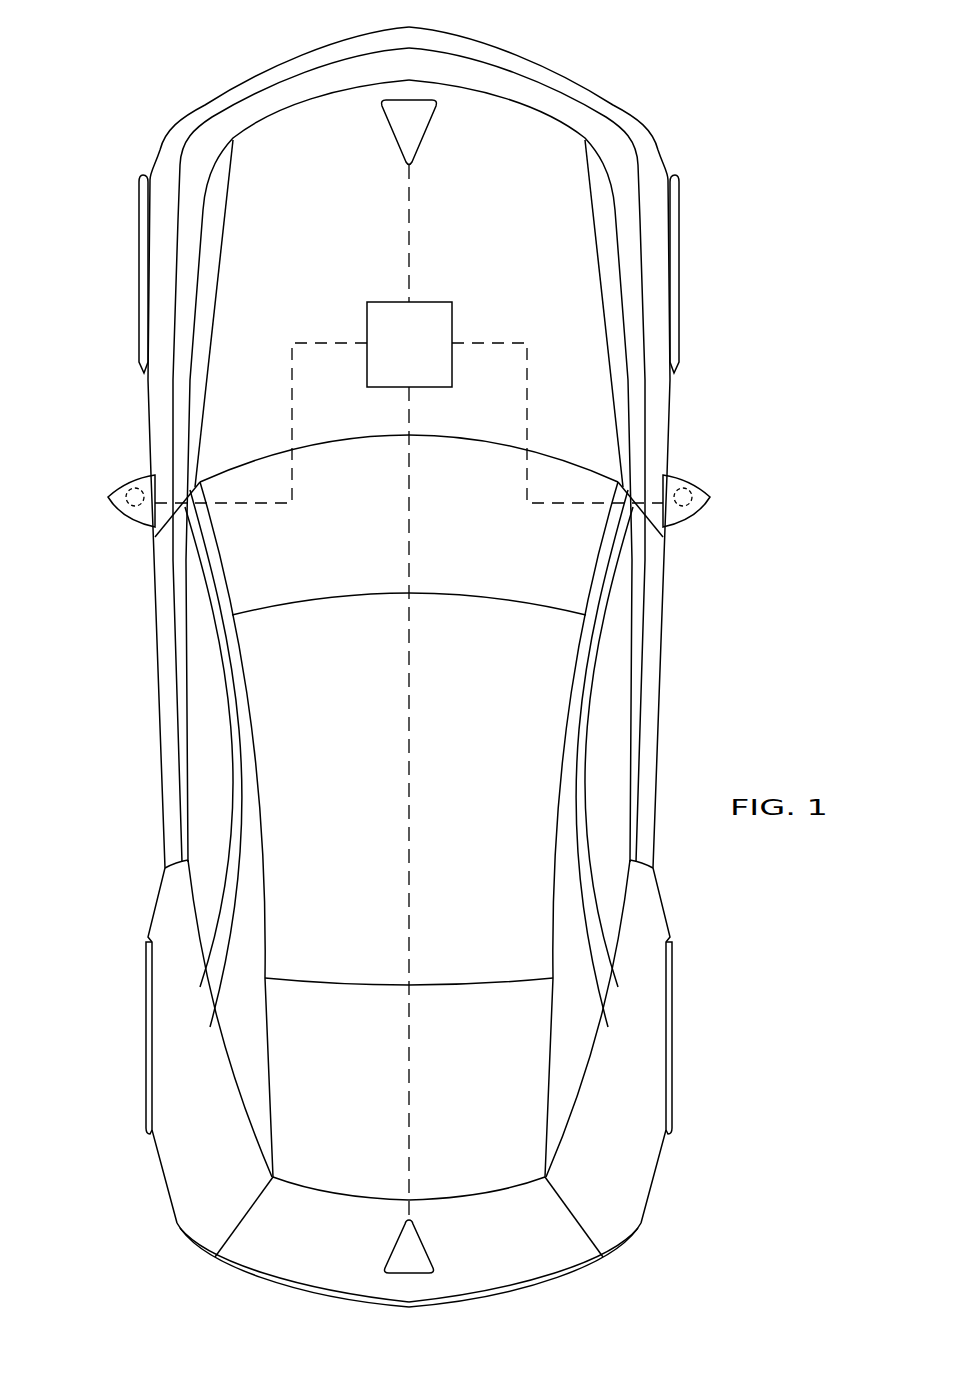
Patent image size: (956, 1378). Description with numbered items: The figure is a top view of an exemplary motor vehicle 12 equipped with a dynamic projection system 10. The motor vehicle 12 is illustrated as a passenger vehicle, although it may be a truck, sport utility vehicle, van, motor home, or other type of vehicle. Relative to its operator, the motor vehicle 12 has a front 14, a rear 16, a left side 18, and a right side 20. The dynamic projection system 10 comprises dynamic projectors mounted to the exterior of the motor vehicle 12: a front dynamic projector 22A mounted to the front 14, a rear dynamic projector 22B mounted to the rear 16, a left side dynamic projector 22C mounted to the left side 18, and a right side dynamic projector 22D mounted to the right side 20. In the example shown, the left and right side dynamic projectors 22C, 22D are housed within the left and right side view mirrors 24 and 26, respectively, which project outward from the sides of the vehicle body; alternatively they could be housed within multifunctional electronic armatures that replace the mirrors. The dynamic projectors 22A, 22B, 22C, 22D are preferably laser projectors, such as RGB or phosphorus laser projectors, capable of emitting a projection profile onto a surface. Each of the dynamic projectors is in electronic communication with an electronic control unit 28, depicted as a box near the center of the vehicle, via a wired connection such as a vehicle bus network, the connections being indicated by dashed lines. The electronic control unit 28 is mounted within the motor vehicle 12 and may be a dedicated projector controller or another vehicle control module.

The dynamic projection system 10 is at (412, 654).
The motor vehicle 12 is at (668, 118).
The front 14 is at (485, 57).
The rear 16 is at (548, 1268).
The left side 18 is at (162, 402).
The right side 20 is at (657, 397).
The front dynamic projector 22A is at (420, 145).
The rear dynamic projector 22B is at (425, 1258).
The left side dynamic projector 22C is at (115, 480).
The right side dynamic projector 22D is at (703, 480).
The left side view mirror 24 is at (117, 506).
The right side view mirror 26 is at (701, 506).
The electronic control unit 28 is at (419, 358).